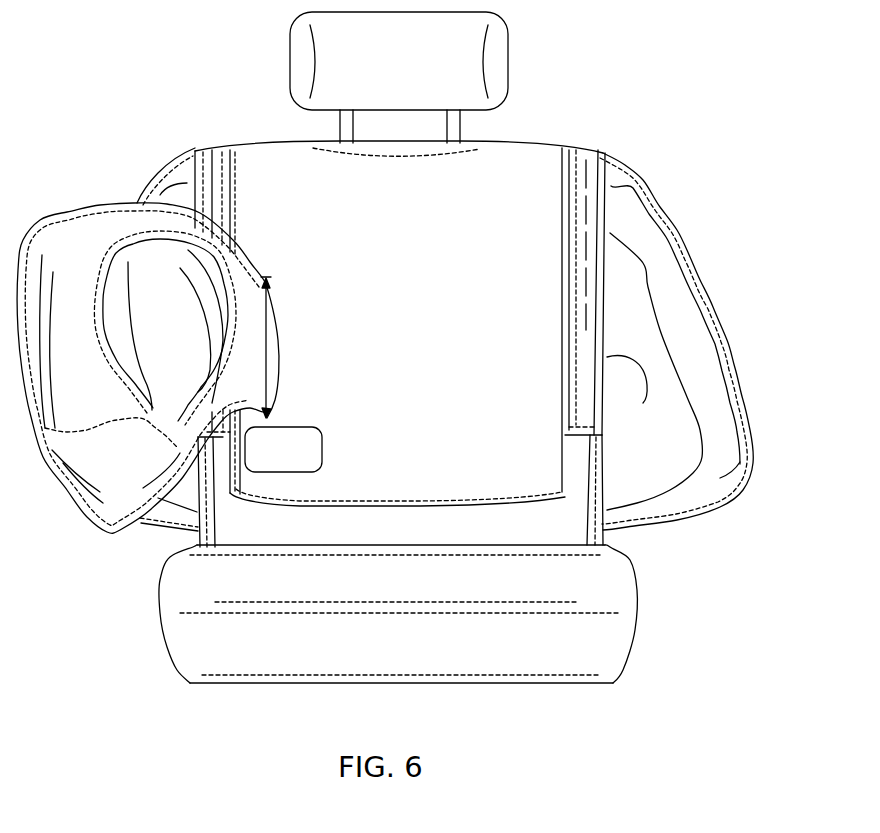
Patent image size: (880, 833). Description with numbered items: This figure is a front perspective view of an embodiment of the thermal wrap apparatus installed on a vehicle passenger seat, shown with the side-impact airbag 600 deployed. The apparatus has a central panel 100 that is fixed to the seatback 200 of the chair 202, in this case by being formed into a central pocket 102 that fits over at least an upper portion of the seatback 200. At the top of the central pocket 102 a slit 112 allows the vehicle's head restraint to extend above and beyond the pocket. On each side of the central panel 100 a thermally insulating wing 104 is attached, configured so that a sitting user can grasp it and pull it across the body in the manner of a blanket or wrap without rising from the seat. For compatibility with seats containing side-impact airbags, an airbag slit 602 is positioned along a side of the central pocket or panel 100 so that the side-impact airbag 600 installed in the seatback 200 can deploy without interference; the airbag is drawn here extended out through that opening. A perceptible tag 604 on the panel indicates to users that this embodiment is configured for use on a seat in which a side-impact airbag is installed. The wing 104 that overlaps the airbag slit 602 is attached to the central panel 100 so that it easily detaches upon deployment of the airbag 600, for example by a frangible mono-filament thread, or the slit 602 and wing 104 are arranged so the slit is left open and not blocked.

The central panel 100 is at (400, 327).
The central pocket 102 is at (370, 271).
The wing 104 is at (676, 341).
The slit 112 is at (383, 173).
The seatback 200 is at (400, 491).
The chair 202 is at (398, 614).
The side-impact airbag 600 is at (141, 368).
The airbag slit 602 is at (312, 347).
The perceptible tag 604 is at (322, 449).